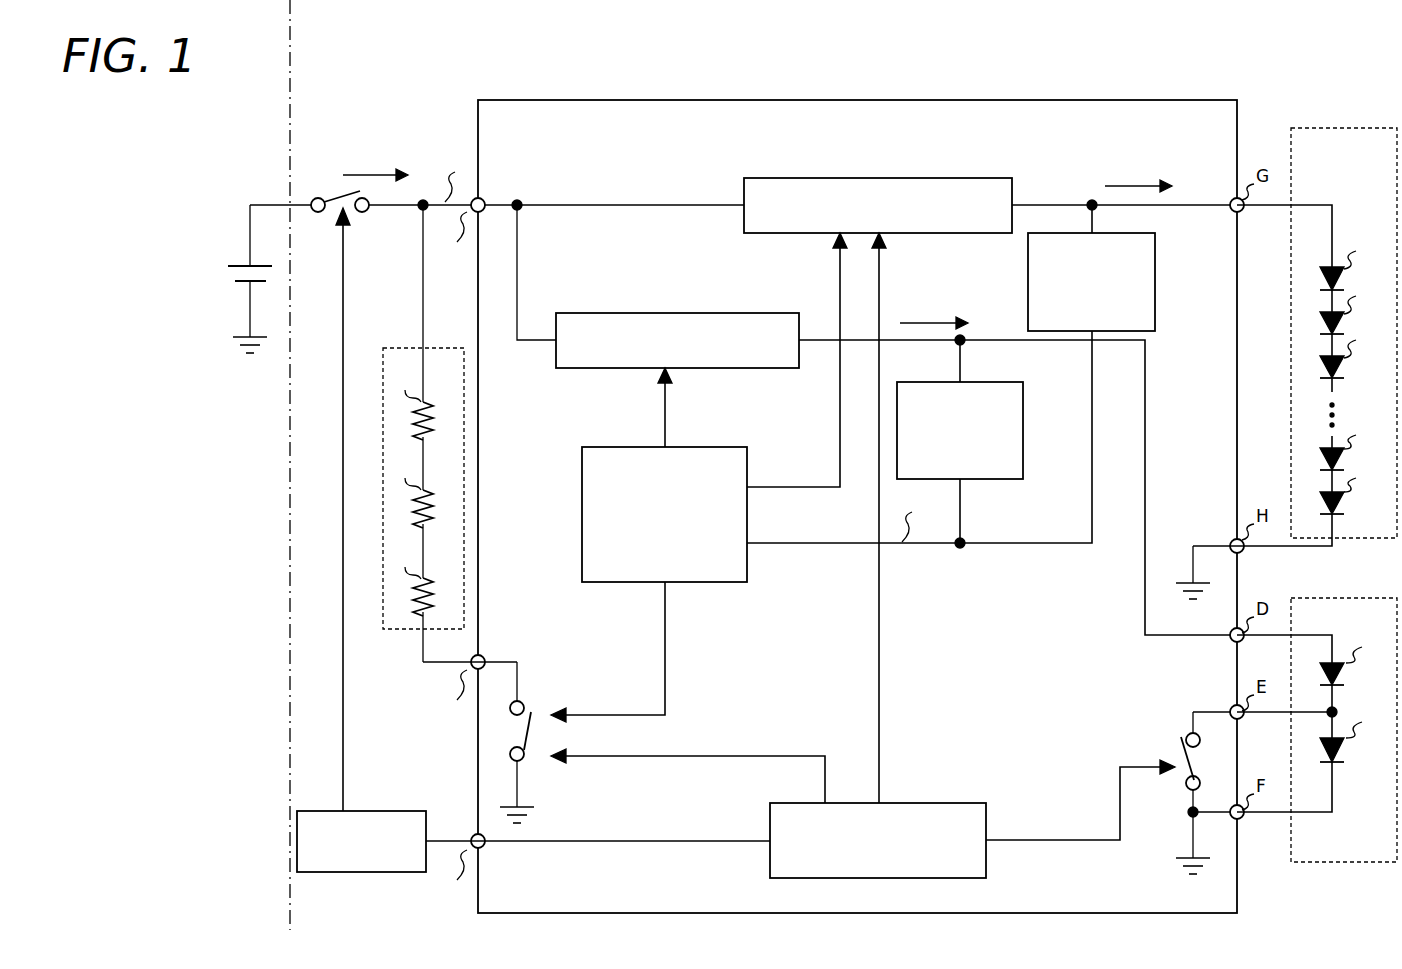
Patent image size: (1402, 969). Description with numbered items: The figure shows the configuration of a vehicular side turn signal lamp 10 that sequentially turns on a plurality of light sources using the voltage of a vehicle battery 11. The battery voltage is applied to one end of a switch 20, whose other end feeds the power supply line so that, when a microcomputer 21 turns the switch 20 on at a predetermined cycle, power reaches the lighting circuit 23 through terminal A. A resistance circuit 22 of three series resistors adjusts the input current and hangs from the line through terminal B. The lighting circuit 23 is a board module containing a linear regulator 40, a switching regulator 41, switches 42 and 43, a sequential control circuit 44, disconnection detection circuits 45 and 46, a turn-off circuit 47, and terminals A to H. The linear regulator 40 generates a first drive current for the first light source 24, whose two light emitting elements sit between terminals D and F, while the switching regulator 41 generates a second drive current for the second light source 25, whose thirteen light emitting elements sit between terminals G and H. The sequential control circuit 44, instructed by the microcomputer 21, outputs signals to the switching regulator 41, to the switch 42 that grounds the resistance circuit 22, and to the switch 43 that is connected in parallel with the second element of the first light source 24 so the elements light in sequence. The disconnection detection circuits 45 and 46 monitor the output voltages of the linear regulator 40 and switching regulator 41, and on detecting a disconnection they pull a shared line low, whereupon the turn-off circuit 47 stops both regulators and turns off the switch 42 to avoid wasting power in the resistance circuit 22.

The turn signal lamp 10 is at (355, 52).
The battery 11 is at (238, 261).
The switch 20 is at (334, 192).
The microcomputer 21 is at (404, 811).
The resistance circuit 22 is at (386, 347).
The lighting circuit 23 is at (491, 99).
The first light source 24 is at (1333, 597).
The second light source 25 is at (1340, 128).
The linear regulator 40 is at (563, 313).
The switching regulator 41 is at (750, 177).
The switch 42 is at (527, 757).
The switch 43 is at (1181, 740).
The sequential control circuit 44 is at (973, 797).
The disconnection detection circuit 45 is at (1023, 390).
The disconnection detection circuit 46 is at (1155, 261).
The turn-off circuit 47 is at (746, 448).